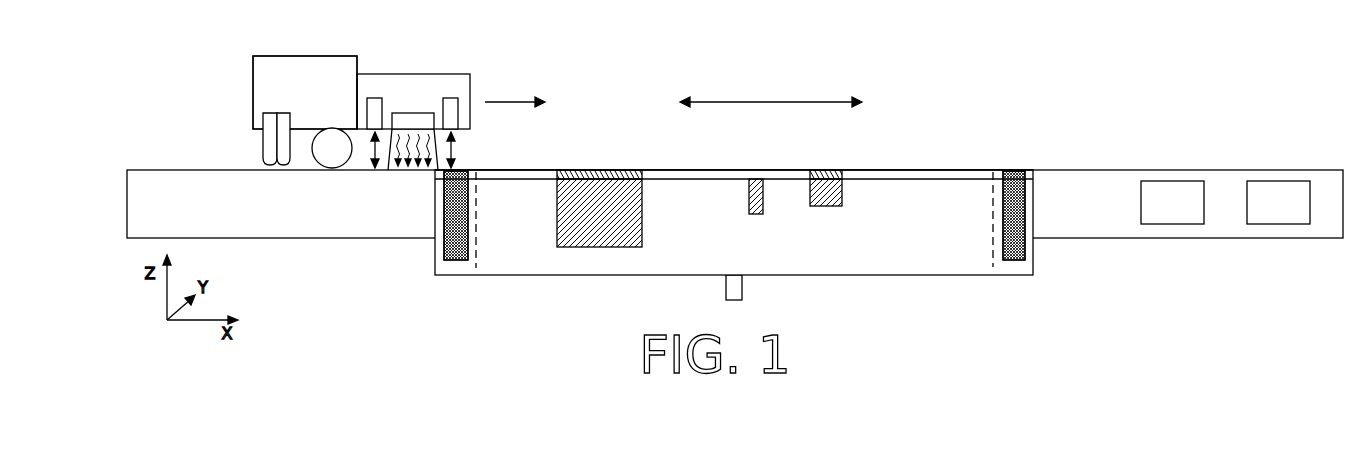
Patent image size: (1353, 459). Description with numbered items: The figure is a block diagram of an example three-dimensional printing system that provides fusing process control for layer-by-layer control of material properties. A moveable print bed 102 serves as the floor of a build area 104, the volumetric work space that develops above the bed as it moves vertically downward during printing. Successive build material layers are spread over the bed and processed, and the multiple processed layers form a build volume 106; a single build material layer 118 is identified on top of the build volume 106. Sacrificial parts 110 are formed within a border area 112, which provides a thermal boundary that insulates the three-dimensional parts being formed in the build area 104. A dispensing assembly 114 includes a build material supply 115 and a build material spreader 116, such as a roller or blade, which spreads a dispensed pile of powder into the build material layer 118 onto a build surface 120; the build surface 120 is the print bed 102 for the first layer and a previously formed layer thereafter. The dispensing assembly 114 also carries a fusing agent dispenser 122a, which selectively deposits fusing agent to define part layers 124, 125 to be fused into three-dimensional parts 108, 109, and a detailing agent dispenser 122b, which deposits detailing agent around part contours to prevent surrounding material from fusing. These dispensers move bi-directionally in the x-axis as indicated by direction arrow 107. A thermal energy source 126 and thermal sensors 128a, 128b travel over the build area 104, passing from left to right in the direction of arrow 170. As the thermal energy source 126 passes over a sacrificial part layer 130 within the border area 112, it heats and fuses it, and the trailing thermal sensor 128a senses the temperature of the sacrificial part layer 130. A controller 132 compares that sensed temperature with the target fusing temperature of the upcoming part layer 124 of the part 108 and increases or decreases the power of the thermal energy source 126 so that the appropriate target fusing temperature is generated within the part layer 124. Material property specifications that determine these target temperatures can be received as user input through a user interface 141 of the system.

The print bed 102 is at (772, 275).
The build area 104 is at (734, 239).
The build volume 106 is at (870, 262).
The direction arrow 107 is at (755, 104).
The 3D part 108 is at (613, 247).
The 3D part 109 is at (830, 207).
The sacrificial part 110 is at (445, 245).
The border area 112 is at (453, 277).
The dispensing assembly 114 is at (263, 56).
The build material supply 115 is at (292, 83).
The build material spreader 116 is at (332, 130).
The build material layer 118 is at (930, 170).
The build surface 120 is at (890, 179).
The fusing agent dispenser 122a is at (263, 136).
The detailing agent dispenser 122b is at (280, 112).
The part layer 124 is at (638, 175).
The part layer 125 is at (830, 172).
The thermal energy source 126 is at (405, 113).
The thermal sensor 128a is at (375, 98).
The thermal sensor 128b is at (453, 98).
The sacrificial part layer 130 is at (465, 172).
The controller 132 is at (1187, 213).
The user interface 141 is at (1293, 213).
The direction arrow 170 is at (505, 103).